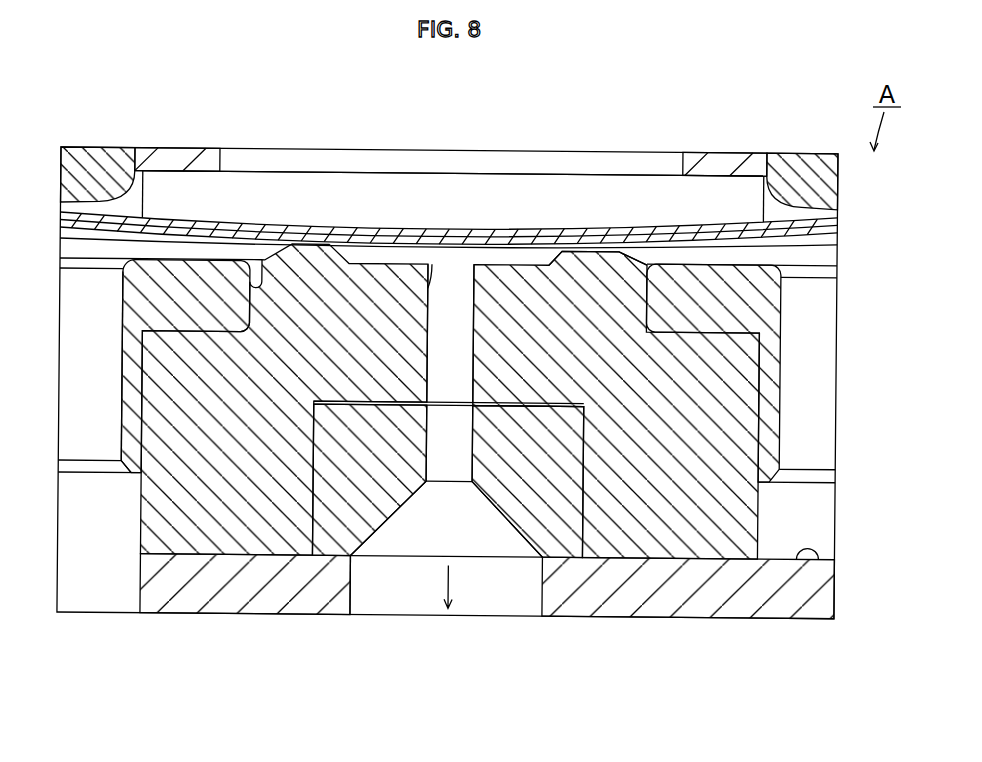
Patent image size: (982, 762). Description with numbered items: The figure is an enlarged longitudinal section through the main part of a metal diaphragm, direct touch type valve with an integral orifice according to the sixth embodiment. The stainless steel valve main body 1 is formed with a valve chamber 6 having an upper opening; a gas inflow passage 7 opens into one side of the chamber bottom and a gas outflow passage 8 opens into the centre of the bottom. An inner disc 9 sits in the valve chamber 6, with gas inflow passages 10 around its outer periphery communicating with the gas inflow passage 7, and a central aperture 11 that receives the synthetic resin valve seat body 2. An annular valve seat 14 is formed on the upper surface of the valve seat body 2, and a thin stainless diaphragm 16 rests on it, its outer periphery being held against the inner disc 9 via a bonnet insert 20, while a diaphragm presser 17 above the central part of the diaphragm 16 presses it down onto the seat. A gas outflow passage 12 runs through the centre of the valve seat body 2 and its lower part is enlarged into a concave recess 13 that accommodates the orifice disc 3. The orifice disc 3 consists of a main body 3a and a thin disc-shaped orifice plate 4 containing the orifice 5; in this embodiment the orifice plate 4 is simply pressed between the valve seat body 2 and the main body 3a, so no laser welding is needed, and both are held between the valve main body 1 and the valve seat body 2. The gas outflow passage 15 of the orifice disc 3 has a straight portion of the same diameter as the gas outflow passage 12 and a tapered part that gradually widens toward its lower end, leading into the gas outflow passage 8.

The valve main body 1 is at (654, 605).
The valve seat body 2 is at (714, 505).
The orifice disc 3 is at (545, 405).
The main body of orifice disc 3a is at (400, 545).
The orifice plate 4 is at (493, 398).
The orifice 5 is at (453, 385).
The valve chamber 6 is at (807, 562).
The gas inflow passage 7 is at (138, 597).
The gas outflow passage 8 is at (350, 598).
The inner disc 9 is at (181, 283).
The gas inflow passages 10 is at (121, 424).
The aperture 11 is at (262, 283).
The gas outflow passage 12 is at (433, 245).
The concave recess 13 is at (320, 503).
The annular valve seat 14 is at (591, 250).
The gas outflow passage 15 is at (465, 468).
The diaphragm 16 is at (706, 226).
The diaphragm presser 17 is at (340, 198).
The bonnet insert 20 is at (810, 174).